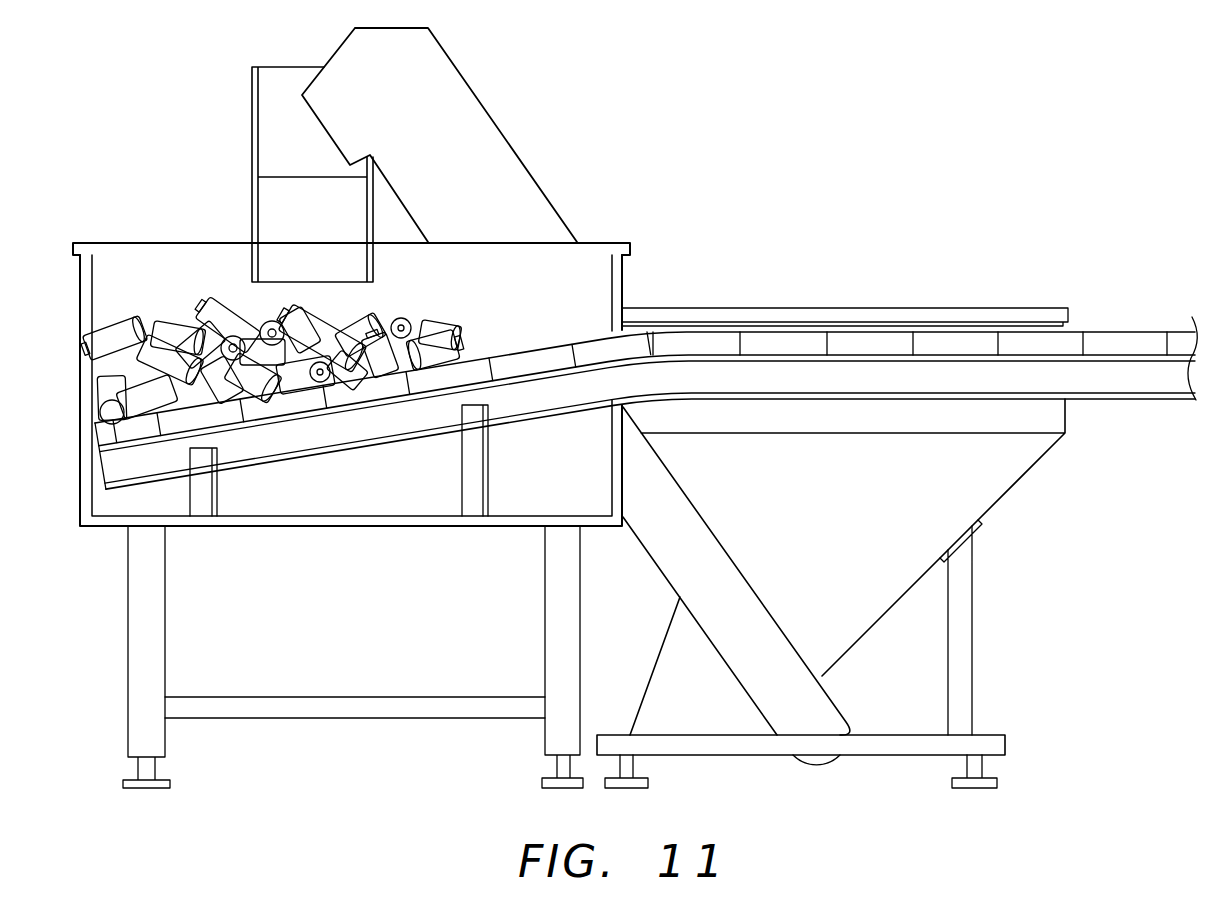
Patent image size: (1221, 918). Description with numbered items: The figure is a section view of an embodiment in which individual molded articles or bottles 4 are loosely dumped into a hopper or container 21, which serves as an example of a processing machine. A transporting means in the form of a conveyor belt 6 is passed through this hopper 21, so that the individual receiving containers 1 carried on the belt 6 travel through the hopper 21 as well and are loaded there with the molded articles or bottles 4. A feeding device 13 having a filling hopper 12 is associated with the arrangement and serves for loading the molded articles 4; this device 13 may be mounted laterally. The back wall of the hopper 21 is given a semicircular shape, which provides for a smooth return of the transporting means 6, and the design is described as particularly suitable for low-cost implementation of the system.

The receiving container 1 is at (900, 333).
The molded articles 4 is at (410, 308).
The conveyor belt 6 is at (955, 372).
The filling hopper 12 is at (1005, 490).
The feeding device 13 is at (474, 108).
The hopper 21 is at (622, 285).